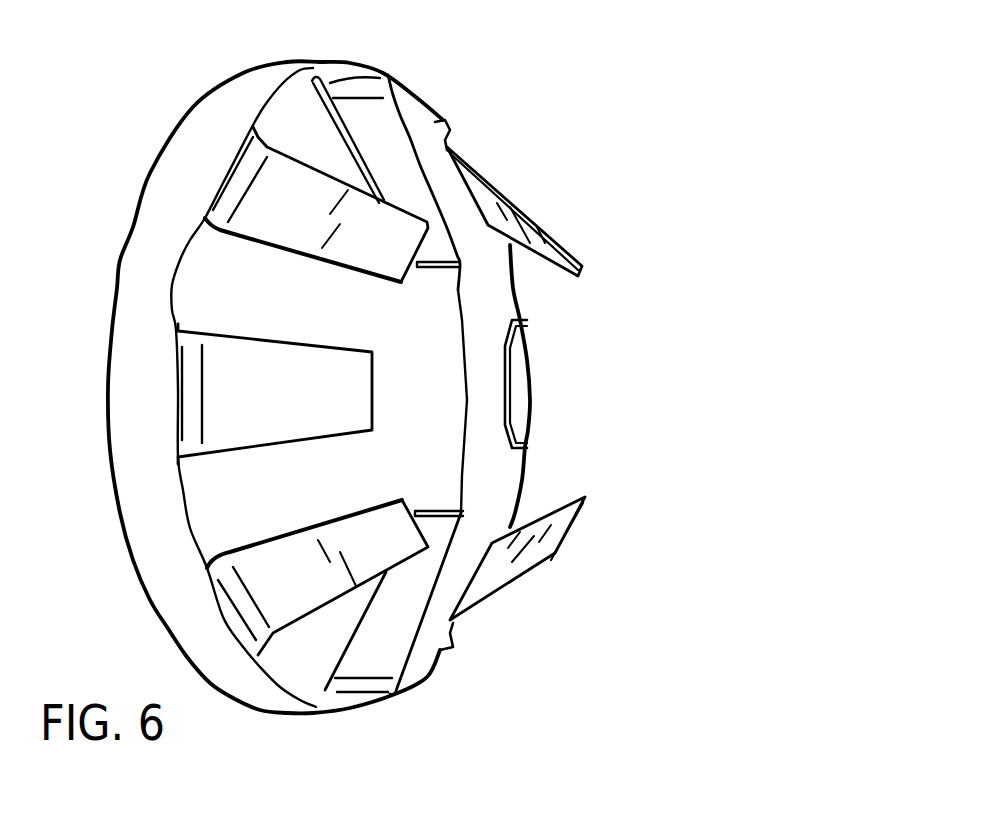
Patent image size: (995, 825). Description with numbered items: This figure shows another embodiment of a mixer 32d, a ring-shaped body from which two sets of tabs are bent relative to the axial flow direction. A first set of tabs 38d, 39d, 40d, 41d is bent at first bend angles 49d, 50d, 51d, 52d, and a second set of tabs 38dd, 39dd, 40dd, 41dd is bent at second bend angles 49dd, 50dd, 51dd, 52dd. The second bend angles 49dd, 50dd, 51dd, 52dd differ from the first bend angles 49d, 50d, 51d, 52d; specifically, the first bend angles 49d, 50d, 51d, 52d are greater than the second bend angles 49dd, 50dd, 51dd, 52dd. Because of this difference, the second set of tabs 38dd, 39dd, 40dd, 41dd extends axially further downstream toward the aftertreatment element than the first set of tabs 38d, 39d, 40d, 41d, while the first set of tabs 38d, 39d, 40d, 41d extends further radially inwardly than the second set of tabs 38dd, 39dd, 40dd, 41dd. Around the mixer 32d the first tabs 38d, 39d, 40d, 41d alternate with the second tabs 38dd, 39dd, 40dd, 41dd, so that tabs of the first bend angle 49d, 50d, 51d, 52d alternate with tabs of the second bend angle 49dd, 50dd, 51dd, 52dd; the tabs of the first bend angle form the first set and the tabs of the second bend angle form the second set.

The mixer 32d is at (298, 57).
The first tab 38d is at (383, 129).
The second tab 38dd is at (315, 227).
The first tab 39d is at (305, 413).
The second tab 39dd is at (320, 600).
The first tab 40d is at (394, 603).
The second tab 40dd is at (560, 498).
The first tab 41d is at (522, 368).
The second tab 41dd is at (548, 237).
The first bend angle 49d is at (362, 97).
The second bend angle 49dd is at (247, 192).
The first bend angle 50d is at (200, 398).
The second bend angle 50dd is at (247, 595).
The first bend angle 51d is at (363, 677).
The second bend angle 51dd is at (459, 625).
The first bend angle 52d is at (530, 413).
The second bend angle 52dd is at (452, 143).